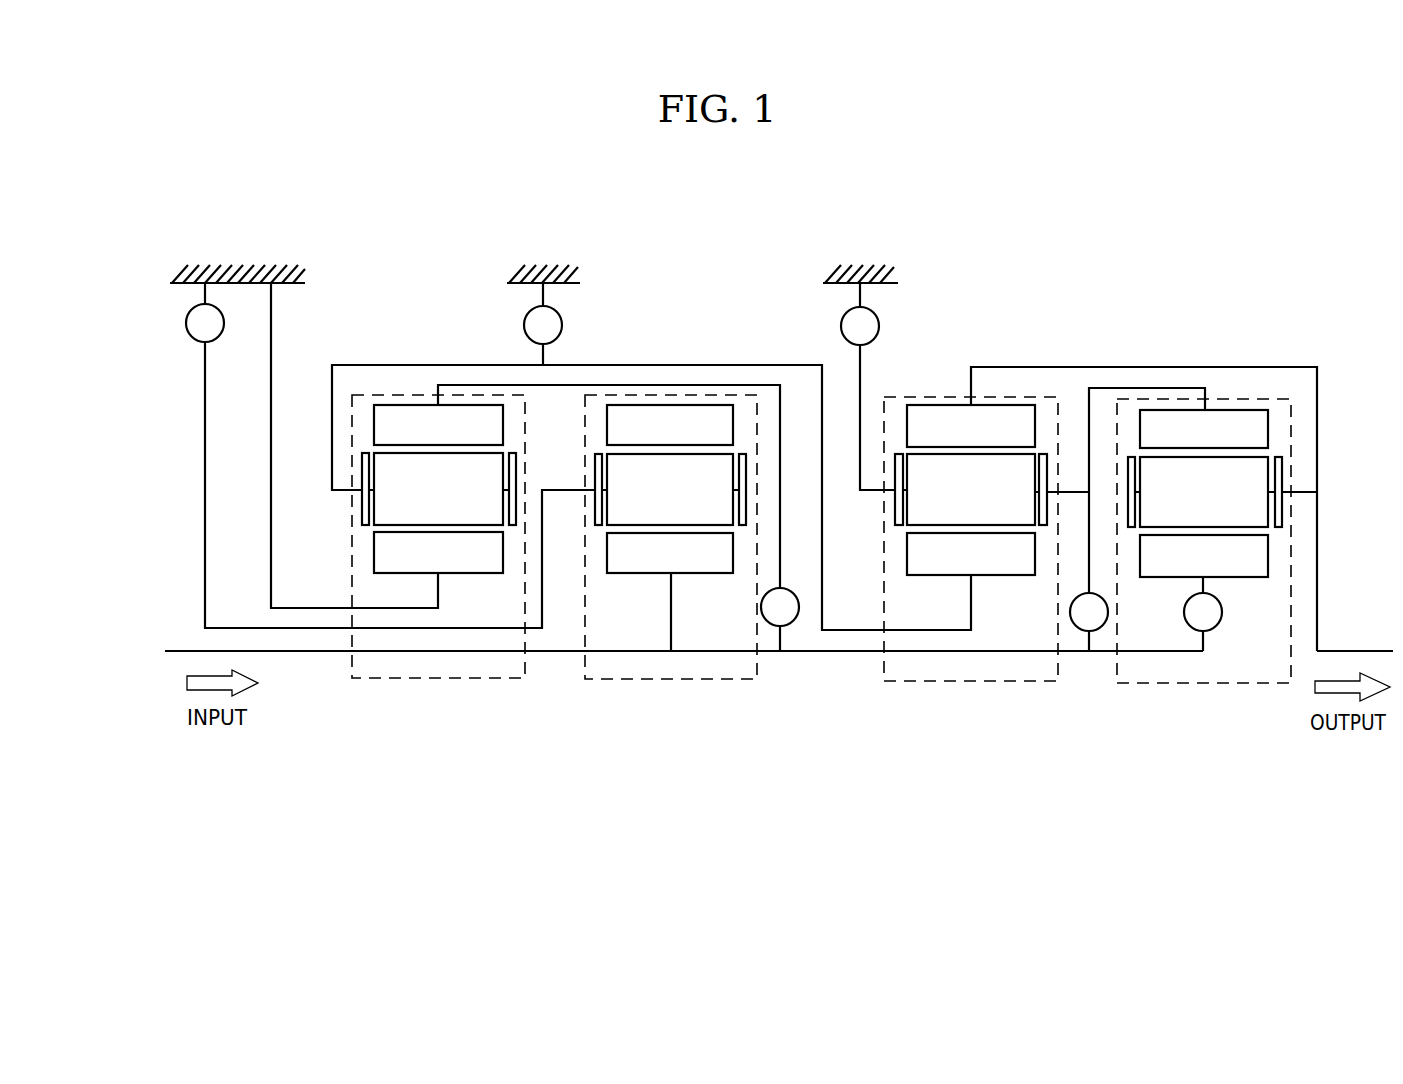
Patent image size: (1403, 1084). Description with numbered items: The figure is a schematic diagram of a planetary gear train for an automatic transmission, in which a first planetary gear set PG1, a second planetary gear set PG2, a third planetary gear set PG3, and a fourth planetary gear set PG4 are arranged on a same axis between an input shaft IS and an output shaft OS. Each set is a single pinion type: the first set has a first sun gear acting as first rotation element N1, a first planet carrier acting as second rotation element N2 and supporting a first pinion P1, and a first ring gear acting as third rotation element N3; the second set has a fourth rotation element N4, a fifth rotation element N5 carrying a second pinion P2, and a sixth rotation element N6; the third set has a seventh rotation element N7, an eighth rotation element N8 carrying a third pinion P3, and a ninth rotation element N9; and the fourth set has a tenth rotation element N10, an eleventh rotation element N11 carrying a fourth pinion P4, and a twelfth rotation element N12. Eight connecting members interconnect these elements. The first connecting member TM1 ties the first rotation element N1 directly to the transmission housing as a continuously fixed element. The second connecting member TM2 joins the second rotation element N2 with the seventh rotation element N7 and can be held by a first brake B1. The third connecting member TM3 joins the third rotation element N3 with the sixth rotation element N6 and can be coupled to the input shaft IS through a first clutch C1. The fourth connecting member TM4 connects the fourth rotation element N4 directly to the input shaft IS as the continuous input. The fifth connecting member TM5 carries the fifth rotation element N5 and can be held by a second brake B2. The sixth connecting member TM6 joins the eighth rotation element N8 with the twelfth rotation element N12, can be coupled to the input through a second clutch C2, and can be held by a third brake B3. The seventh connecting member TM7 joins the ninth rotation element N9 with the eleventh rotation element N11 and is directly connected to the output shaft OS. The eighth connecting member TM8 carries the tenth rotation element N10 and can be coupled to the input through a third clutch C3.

The input shaft IS is at (180, 648).
The output shaft OS is at (1360, 649).
The first planetary gear set PG1 is at (443, 690).
The second planetary gear set PG2 is at (675, 690).
The third planetary gear set PG3 is at (973, 695).
The fourth planetary gear set PG4 is at (1208, 692).
The first rotation element N1 is at (438, 552).
The second rotation element N2 is at (362, 506).
The third rotation element N3 is at (438, 425).
The fourth rotation element N4 is at (670, 553).
The fifth rotation element N5 is at (595, 468).
The sixth rotation element N6 is at (670, 425).
The seventh rotation element N7 is at (971, 554).
The eighth rotation element N8 is at (895, 501).
The ninth rotation element N9 is at (971, 426).
The tenth rotation element N10 is at (1204, 556).
The eleventh rotation element N11 is at (1283, 470).
The twelfth rotation element N12 is at (1204, 429).
The first pinion P1 is at (438, 489).
The second pinion P2 is at (670, 489).
The third pinion P3 is at (971, 489).
The fourth pinion P4 is at (1204, 492).
The first connecting member TM1 is at (307, 611).
The second connecting member TM2 is at (408, 364).
The third connecting member TM3 is at (621, 385).
The fourth connecting member TM4 is at (672, 603).
The fifth connecting member TM5 is at (547, 567).
The sixth connecting member TM6 is at (1088, 392).
The seventh connecting member TM7 is at (1190, 366).
The eighth connecting member TM8 is at (1213, 590).
The first brake B1 is at (543, 324).
The second brake B2 is at (205, 312).
The third brake B3 is at (868, 386).
The first clutch C1 is at (780, 619).
The second clutch C2 is at (1089, 622).
The third clutch C3 is at (1203, 622).